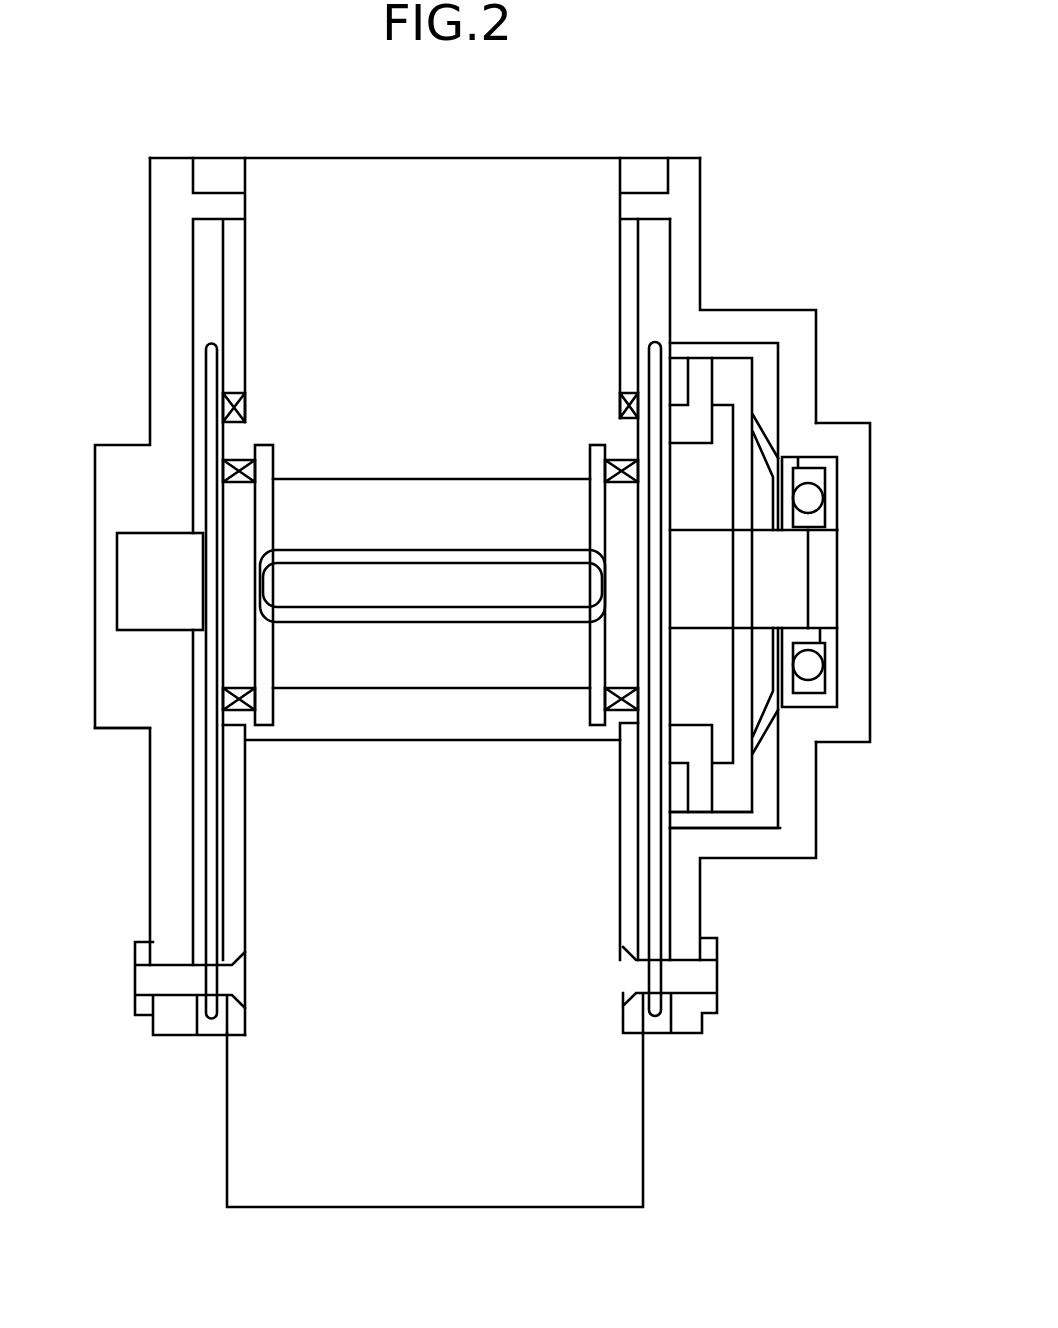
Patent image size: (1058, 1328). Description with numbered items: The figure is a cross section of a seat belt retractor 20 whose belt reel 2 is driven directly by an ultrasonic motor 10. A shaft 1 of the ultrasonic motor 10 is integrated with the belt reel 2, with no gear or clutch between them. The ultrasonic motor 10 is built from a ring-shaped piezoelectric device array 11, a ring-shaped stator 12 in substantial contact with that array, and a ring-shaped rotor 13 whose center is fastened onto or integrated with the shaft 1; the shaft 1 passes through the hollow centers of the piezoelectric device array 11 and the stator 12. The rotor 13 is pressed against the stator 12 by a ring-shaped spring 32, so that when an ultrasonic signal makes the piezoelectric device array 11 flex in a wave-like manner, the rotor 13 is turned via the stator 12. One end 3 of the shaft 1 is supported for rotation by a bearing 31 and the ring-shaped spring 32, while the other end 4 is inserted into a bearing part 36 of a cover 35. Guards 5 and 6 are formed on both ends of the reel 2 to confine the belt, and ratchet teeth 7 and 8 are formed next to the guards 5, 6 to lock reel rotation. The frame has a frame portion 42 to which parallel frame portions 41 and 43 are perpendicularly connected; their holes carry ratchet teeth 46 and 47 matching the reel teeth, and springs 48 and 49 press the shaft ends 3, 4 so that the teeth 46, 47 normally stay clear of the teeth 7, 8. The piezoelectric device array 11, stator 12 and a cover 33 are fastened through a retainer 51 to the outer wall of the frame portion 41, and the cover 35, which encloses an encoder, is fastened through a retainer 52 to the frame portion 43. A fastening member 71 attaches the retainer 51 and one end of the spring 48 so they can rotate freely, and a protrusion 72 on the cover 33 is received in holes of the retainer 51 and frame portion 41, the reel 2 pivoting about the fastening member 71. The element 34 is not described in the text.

The shaft 1 is at (787, 557).
The belt reel 2 is at (440, 490).
The one end of the shaft 3 is at (787, 617).
The other end of the shaft 4 is at (140, 555).
The guard 5 is at (592, 462).
The guard 6 is at (273, 458).
The ratchet teeth 7 is at (620, 448).
The ratchet teeth 8 is at (246, 460).
The ultrasonic motor 10 is at (808, 275).
The ring-shaped piezoelectric device array 11 is at (685, 803).
The ring-shaped stator 12 is at (705, 803).
The ring-shaped rotor 13 is at (743, 377).
The seat belt retractor 20 is at (344, 136).
The bearing 31 is at (833, 663).
The ring-shaped spring 32 is at (778, 730).
The cover 33 is at (860, 482).
The upper bearing 34 is at (832, 455).
The cover 35 is at (150, 343).
The bearing part 36 is at (137, 632).
The frame portion 41 is at (633, 903).
The frame portion 42 is at (405, 775).
The frame portion 43 is at (240, 1027).
The ratchet teeth 46 is at (620, 400).
The ratchet teeth 47 is at (245, 405).
The spring 48 is at (655, 920).
The spring 49 is at (212, 818).
The retainer 51 is at (654, 288).
The retainer 52 is at (205, 270).
The fastening member 71 is at (683, 987).
The protrusion 72 is at (648, 208).